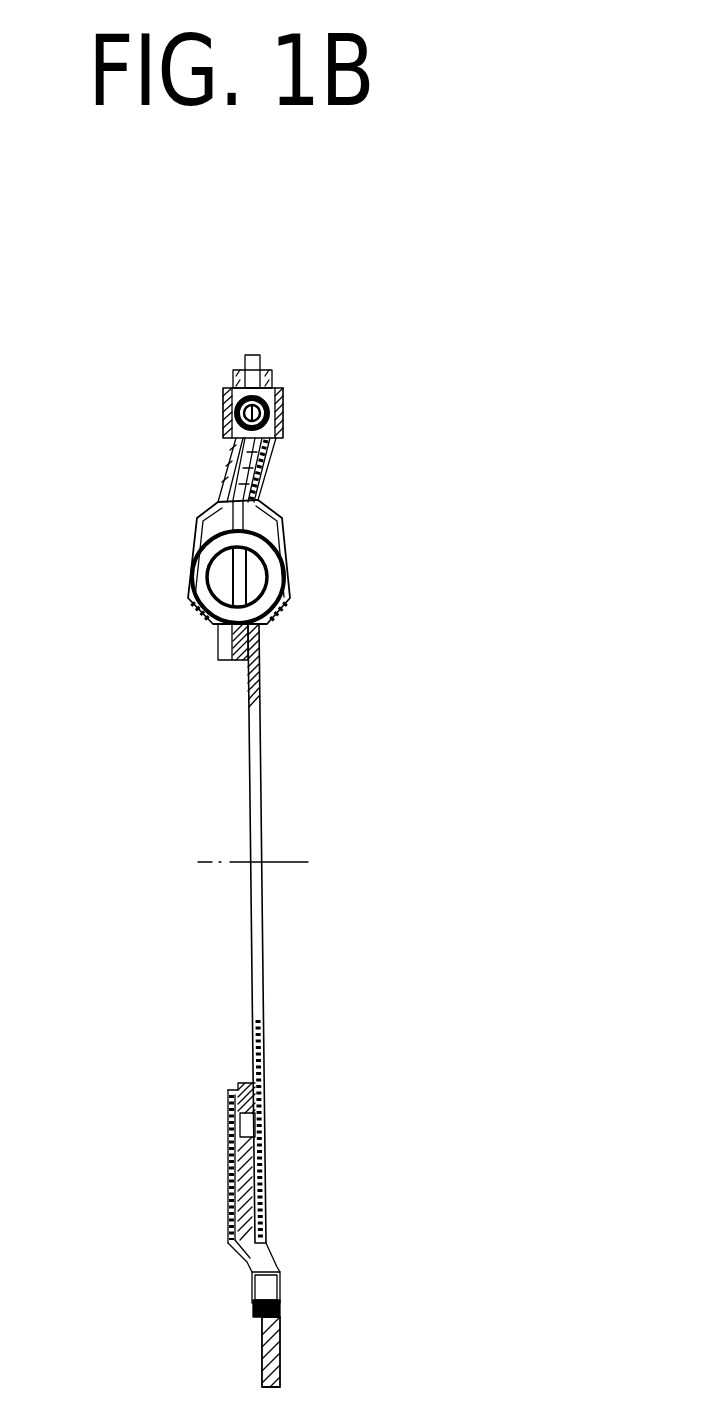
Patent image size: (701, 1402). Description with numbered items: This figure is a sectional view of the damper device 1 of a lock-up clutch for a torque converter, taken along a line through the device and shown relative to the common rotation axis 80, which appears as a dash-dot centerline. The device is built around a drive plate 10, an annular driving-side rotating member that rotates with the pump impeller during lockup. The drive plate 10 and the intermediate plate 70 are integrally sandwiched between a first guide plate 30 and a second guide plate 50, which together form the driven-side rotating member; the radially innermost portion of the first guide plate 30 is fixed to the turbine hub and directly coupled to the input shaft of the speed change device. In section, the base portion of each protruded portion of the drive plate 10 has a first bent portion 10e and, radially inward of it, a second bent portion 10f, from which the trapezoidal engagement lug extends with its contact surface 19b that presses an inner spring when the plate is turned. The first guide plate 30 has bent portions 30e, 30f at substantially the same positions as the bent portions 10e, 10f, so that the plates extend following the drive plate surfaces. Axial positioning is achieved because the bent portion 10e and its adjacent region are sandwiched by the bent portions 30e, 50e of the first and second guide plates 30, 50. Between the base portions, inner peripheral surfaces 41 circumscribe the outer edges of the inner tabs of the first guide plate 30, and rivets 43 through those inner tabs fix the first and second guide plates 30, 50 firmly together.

The damper device 1 is at (176, 403).
The drive plate 10 is at (262, 362).
The first bent portion 10e is at (280, 441).
The bent portion of first guide plate 30e is at (278, 448).
The second bent portion 10f is at (262, 489).
The bent portion of first guide plate 30f is at (260, 506).
The bent portion of second guide plate 50e is at (236, 446).
The contact surface 19b is at (232, 577).
The second guide plate 50 is at (200, 617).
The first guide plate 30 is at (260, 657).
The intermediate plate 70 is at (237, 658).
The rotation axis 80 is at (290, 862).
The rivet 43 is at (280, 1270).
The inner peripheral surface 41 is at (280, 1307).